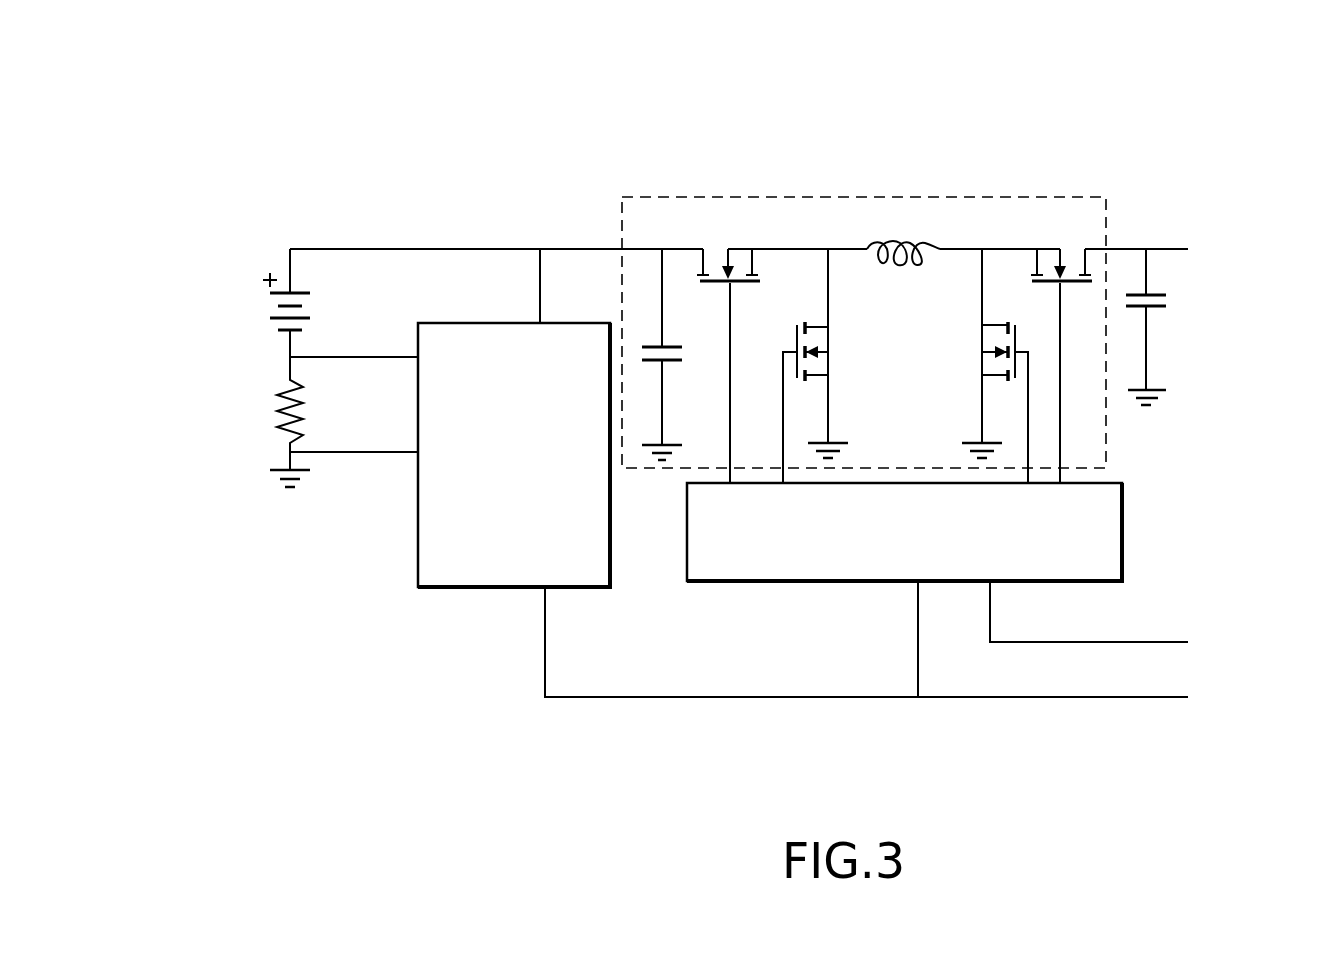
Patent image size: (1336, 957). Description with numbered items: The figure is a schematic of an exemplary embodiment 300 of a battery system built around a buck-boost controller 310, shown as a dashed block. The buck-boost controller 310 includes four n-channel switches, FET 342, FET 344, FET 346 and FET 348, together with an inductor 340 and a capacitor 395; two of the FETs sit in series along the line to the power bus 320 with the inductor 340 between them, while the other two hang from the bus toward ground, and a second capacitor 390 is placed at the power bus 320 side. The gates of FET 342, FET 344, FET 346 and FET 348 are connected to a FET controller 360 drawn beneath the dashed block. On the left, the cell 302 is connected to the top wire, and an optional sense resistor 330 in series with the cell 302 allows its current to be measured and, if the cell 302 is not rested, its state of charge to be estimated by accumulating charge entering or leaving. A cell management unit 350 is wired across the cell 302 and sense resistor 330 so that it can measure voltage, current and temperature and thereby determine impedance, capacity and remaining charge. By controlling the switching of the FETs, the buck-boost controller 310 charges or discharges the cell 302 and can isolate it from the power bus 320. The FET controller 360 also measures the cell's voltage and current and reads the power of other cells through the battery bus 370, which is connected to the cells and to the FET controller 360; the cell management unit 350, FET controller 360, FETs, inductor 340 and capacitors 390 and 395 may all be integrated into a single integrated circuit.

The embodiment 300 is at (188, 148).
The cell 302 is at (270, 319).
The buck-boost controller 310 is at (690, 197).
The power bus 320 is at (1185, 222).
The sense resistor 330 is at (275, 418).
The inductor 340 is at (870, 247).
The FET 342 is at (733, 286).
The FET 344 is at (830, 372).
The FET 346 is at (982, 371).
The FET 348 is at (1052, 248).
The cell management unit 350 is at (417, 543).
The FET controller 360 is at (687, 578).
The battery bus 370 is at (1220, 623).
The capacitor 390 is at (1162, 307).
The capacitor 395 is at (672, 364).